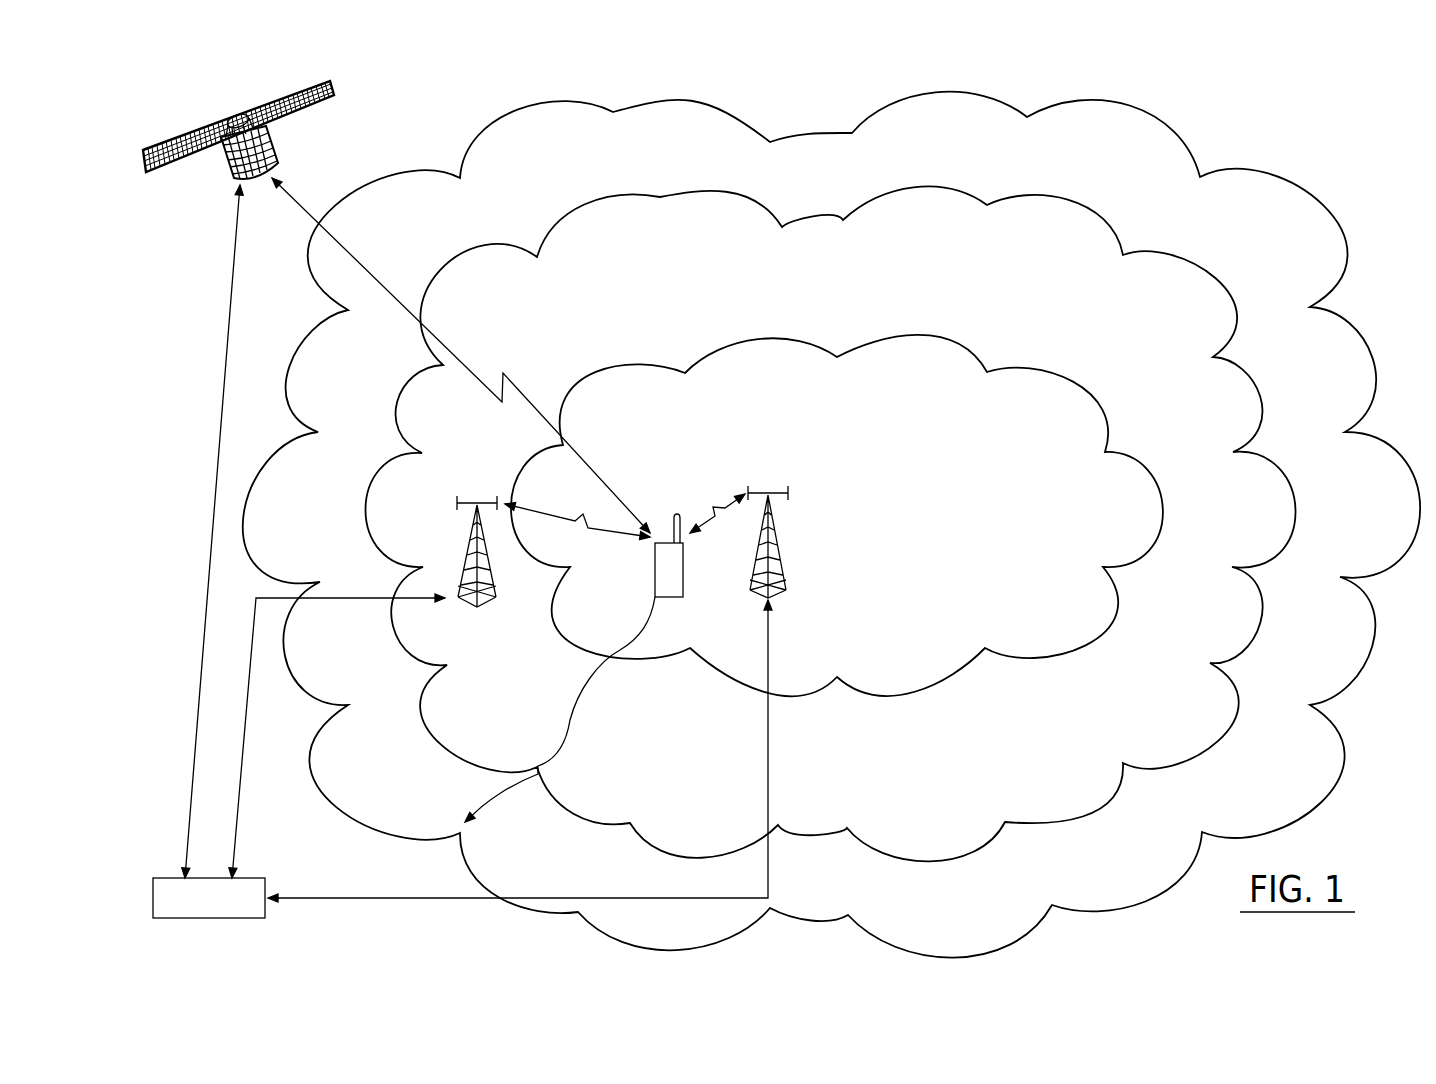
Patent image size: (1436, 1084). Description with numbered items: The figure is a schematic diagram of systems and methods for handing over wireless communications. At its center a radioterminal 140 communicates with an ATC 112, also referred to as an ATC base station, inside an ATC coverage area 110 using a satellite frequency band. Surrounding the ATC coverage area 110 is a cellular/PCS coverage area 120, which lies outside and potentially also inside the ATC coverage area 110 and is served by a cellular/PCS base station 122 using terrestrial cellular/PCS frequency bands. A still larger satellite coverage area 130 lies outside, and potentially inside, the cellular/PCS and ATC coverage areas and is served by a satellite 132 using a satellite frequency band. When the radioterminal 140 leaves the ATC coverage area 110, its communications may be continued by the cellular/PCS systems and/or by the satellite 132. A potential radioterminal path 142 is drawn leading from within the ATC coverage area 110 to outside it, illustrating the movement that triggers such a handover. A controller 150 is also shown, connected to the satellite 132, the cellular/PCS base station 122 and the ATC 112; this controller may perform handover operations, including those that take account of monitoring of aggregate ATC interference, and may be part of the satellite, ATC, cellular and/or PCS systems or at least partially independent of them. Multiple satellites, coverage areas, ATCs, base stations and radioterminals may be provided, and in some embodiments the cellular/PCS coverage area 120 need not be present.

The ATC coverage area 110 is at (822, 414).
The ATC 112 is at (785, 566).
The cellular/PCS coverage area 120 is at (822, 289).
The cellular/PCS base station 122 is at (468, 553).
The satellite coverage area 130 is at (802, 198).
The satellite 132 is at (272, 151).
The radioterminal 140 is at (683, 580).
The radioterminal path 142 is at (568, 737).
The controller 150 is at (256, 878).